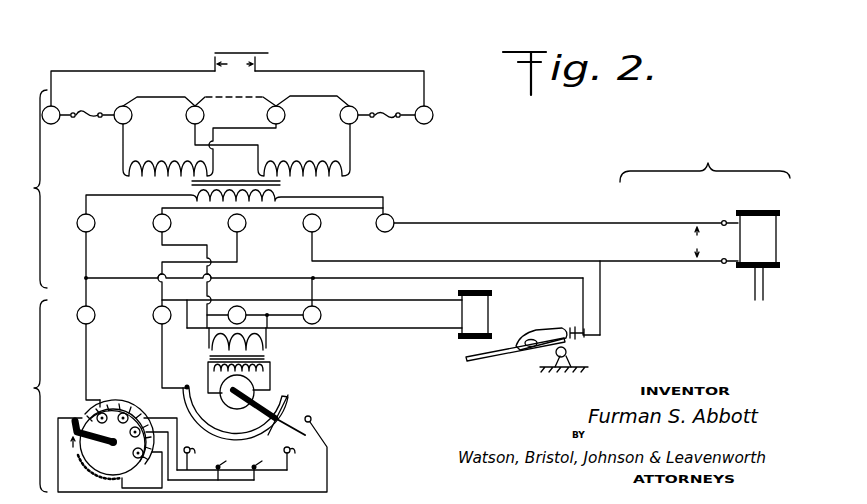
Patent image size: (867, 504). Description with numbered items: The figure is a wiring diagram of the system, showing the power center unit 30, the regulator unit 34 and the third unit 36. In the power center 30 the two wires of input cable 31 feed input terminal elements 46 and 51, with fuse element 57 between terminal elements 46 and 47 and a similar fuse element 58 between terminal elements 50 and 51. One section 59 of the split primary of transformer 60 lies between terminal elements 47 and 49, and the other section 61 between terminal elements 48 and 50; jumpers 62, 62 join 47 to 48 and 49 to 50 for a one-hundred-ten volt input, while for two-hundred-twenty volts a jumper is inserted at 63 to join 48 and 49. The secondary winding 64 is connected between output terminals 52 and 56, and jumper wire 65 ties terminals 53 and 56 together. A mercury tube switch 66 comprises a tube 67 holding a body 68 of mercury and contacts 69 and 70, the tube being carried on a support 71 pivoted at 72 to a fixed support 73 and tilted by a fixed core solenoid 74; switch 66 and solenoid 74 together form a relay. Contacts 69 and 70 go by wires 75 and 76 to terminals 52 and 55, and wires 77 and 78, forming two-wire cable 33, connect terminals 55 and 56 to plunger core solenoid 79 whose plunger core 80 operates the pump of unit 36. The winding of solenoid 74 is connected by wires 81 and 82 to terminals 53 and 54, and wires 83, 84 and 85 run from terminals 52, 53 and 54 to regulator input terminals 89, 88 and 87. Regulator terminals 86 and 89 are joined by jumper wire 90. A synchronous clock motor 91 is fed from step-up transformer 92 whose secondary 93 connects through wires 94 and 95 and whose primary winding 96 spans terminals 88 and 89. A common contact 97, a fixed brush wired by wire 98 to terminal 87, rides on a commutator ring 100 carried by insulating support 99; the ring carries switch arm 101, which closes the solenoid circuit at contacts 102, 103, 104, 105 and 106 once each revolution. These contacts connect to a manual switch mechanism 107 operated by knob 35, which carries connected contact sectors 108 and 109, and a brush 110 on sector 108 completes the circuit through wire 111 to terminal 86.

The power center unit 30 is at (26, 189).
The input cable 31 is at (237, 49).
The two-wire cable 33 is at (697, 242).
The regulator unit 34 is at (27, 396).
The control knob 35 is at (93, 450).
The third unit 36 is at (705, 160).
The terminal element L1 46 is at (58, 108).
The terminal element L2 47 is at (128, 108).
The terminal element L3 48 is at (192, 106).
The terminal element L4 49 is at (274, 106).
The terminal element L5 50 is at (354, 107).
The terminal element L6 51 is at (420, 106).
The output terminal element R1 52 is at (94, 220).
The output terminal element R2 53 is at (170, 220).
The output terminal element R3 54 is at (245, 220).
The output terminal element P1 55 is at (320, 220).
The output terminal element P2 56 is at (392, 216).
The fuse element 57 is at (90, 120).
The fuse element 58 is at (388, 120).
The primary section 59 is at (160, 166).
The transformer 60 is at (243, 169).
The primary section 61 is at (312, 170).
The jumpers 62 is at (163, 97).
The jumper position 63 is at (244, 88).
The secondary winding 64 is at (285, 192).
The jumper wire 65 is at (388, 195).
The mercury tube switch 66 is at (551, 318).
The tube 67 is at (538, 328).
The body of mercury 68 is at (529, 350).
The circuit contact 69 is at (572, 326).
The circuit contact 70 is at (567, 349).
The support 71 is at (494, 358).
The pivot 72 is at (575, 360).
The fixed support 73 is at (560, 375).
The fixed core solenoid 74 is at (498, 305).
The wire 75 is at (586, 300).
The wire 76 is at (602, 312).
The wire 77 is at (652, 259).
The wire 78 is at (652, 221).
The plunger core solenoid 79 is at (766, 205).
The plunger core 80 is at (754, 288).
The wire 81 is at (402, 301).
The wire 82 is at (434, 326).
The wire 83 is at (90, 266).
The wire 84 is at (160, 247).
The wire 85 is at (239, 258).
The input terminal element RT 86 is at (92, 308).
The input terminal element R3 87 is at (156, 306).
The input terminal element R2 88 is at (245, 311).
The input terminal element R1 89 is at (320, 311).
The jumper wire 90 is at (86, 297).
The synchronous clock motor 91 is at (231, 409).
The step-up transformer 92 is at (258, 360).
The secondary 93 is at (273, 366).
The wire 94 is at (272, 380).
The wire 95 is at (212, 368).
The primary winding 96 is at (209, 342).
The common contact 97 is at (206, 374).
The wire 98 is at (166, 393).
The insulating support 99 is at (262, 412).
The commutator ring 100 is at (294, 397).
The switch arm 101 is at (298, 414).
The contact 102 is at (312, 419).
The contact 103 is at (305, 458).
The contact 104 is at (270, 459).
The contact 105 is at (236, 464).
The contact 106 is at (227, 463).
The manual control switch mechanism 107 is at (125, 399).
The contact sector 108 is at (141, 409).
The contact sector 109 is at (96, 474).
The brush 110 is at (102, 400).
The wire 111 is at (90, 354).